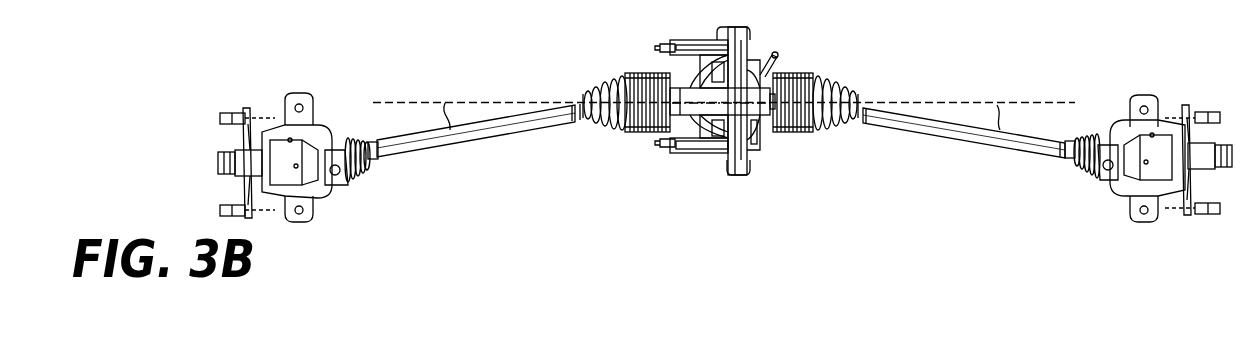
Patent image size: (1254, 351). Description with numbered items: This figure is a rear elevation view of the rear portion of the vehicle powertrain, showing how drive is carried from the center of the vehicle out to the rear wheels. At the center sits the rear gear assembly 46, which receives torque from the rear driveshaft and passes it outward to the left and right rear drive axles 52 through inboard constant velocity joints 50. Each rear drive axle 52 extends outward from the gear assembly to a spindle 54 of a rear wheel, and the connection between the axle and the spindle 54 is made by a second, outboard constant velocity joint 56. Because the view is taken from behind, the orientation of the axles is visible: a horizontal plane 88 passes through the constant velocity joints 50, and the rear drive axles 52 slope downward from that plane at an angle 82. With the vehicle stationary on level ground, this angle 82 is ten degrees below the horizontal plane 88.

The rear gear assembly 46 is at (735, 186).
The constant velocity joint 50 is at (650, 72).
The rear drive axle 52 is at (446, 148).
The spindle 54 is at (266, 148).
The constant velocity joint 56 is at (364, 178).
The angle 82 is at (428, 117).
The horizontal plane 88 is at (407, 101).